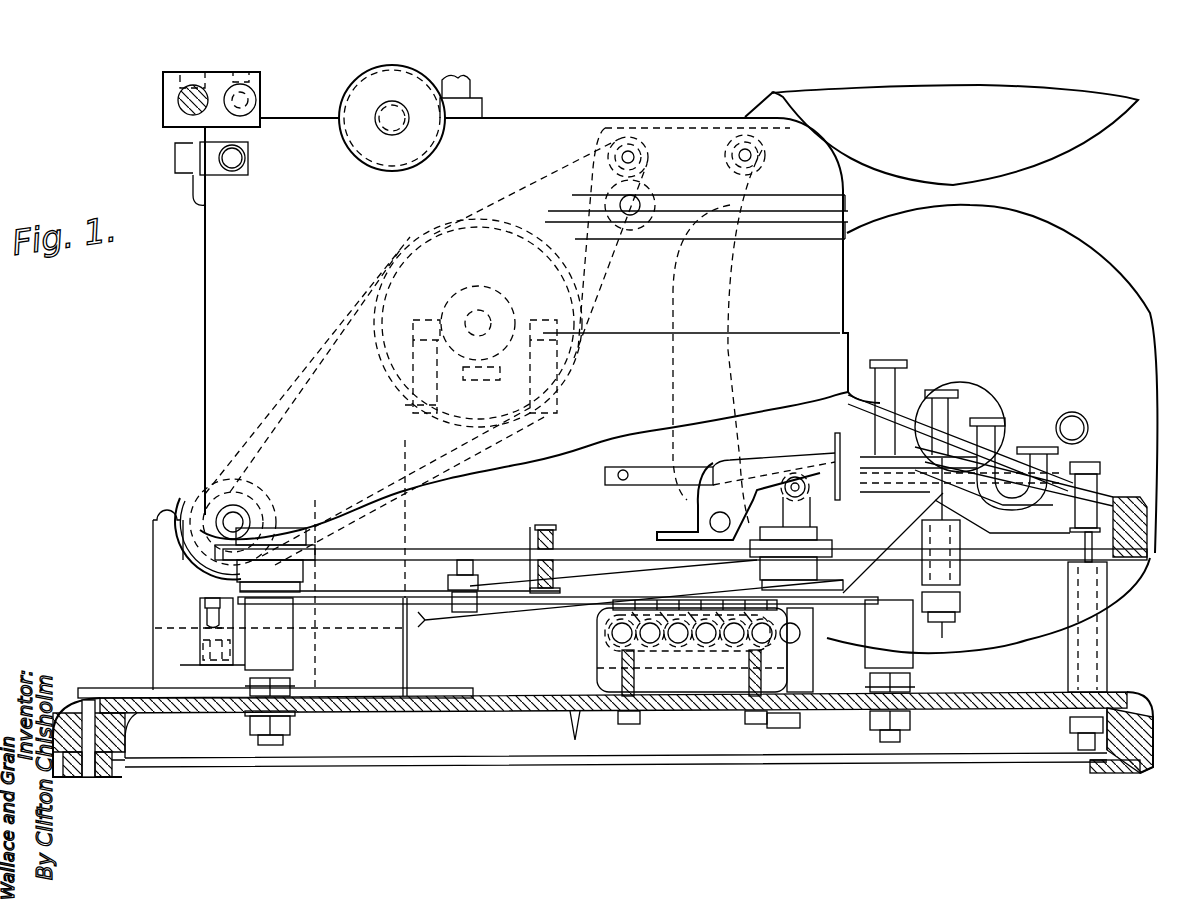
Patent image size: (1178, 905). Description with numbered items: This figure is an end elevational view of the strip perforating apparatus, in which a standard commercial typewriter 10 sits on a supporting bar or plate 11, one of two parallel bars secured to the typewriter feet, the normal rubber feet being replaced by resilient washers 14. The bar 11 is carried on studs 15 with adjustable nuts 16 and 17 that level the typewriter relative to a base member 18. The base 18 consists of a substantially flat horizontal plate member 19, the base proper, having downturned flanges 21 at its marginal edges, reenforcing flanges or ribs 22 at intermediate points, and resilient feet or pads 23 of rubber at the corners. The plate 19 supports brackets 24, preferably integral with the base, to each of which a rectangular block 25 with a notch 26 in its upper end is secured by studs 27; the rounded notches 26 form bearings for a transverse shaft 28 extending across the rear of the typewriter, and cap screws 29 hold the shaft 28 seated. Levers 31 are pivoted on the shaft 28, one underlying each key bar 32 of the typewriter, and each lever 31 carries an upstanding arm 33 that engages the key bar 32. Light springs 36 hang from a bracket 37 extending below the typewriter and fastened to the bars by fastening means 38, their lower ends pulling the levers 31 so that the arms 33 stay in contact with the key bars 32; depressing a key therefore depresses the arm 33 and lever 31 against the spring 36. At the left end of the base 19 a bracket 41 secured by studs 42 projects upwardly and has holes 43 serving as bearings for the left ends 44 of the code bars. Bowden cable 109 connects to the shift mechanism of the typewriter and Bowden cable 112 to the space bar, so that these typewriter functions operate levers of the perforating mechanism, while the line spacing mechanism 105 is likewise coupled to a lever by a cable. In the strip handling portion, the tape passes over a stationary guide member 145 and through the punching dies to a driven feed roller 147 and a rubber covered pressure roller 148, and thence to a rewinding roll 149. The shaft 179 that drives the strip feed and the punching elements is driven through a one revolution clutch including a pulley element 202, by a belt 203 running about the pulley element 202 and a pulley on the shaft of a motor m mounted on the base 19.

The typewriter 10 is at (205, 325).
The line spacing mechanism 105 is at (491, 94).
The rubber covered pressure roller 148 is at (650, 152).
The driven feed roller 147 is at (645, 198).
The pulley element 202 is at (472, 228).
The shaft 179 is at (478, 310).
The belt 203 is at (300, 388).
The rewinding roll 149 is at (1062, 167).
The stationary guide member 145 is at (1083, 240).
The motor m is at (183, 497).
The resilient washers 14 is at (200, 585).
The bar or plate 11 is at (520, 603).
The levers 31 is at (430, 612).
The springs 36 is at (552, 545).
The bracket 37 is at (538, 530).
The fastening means 38 is at (555, 590).
The key bar 32 is at (655, 485).
The upstanding arm 33 is at (812, 512).
The Bowden cable 109 is at (945, 630).
The Bowden cable 112 is at (1075, 738).
The bracket 41 is at (600, 655).
The left ends 44 is at (612, 633).
The holes 43 is at (720, 640).
The studs 42 is at (740, 722).
The studs 15 is at (295, 632).
The adjustable nuts 16 is at (285, 688).
The adjustable nuts 17 is at (290, 728).
The cap screws 29 is at (213, 600).
The notch 26 is at (205, 608).
The transverse shaft 28 is at (205, 616).
The rectangular block 25 is at (200, 630).
The studs 27 is at (200, 648).
The brackets 24 is at (200, 672).
The base member 18 is at (740, 766).
The reenforcing flanges or ribs 22 is at (615, 735).
The plate member 19 is at (480, 708).
The downturned flanges 21 is at (122, 777).
The feet or pads 23 is at (80, 778).